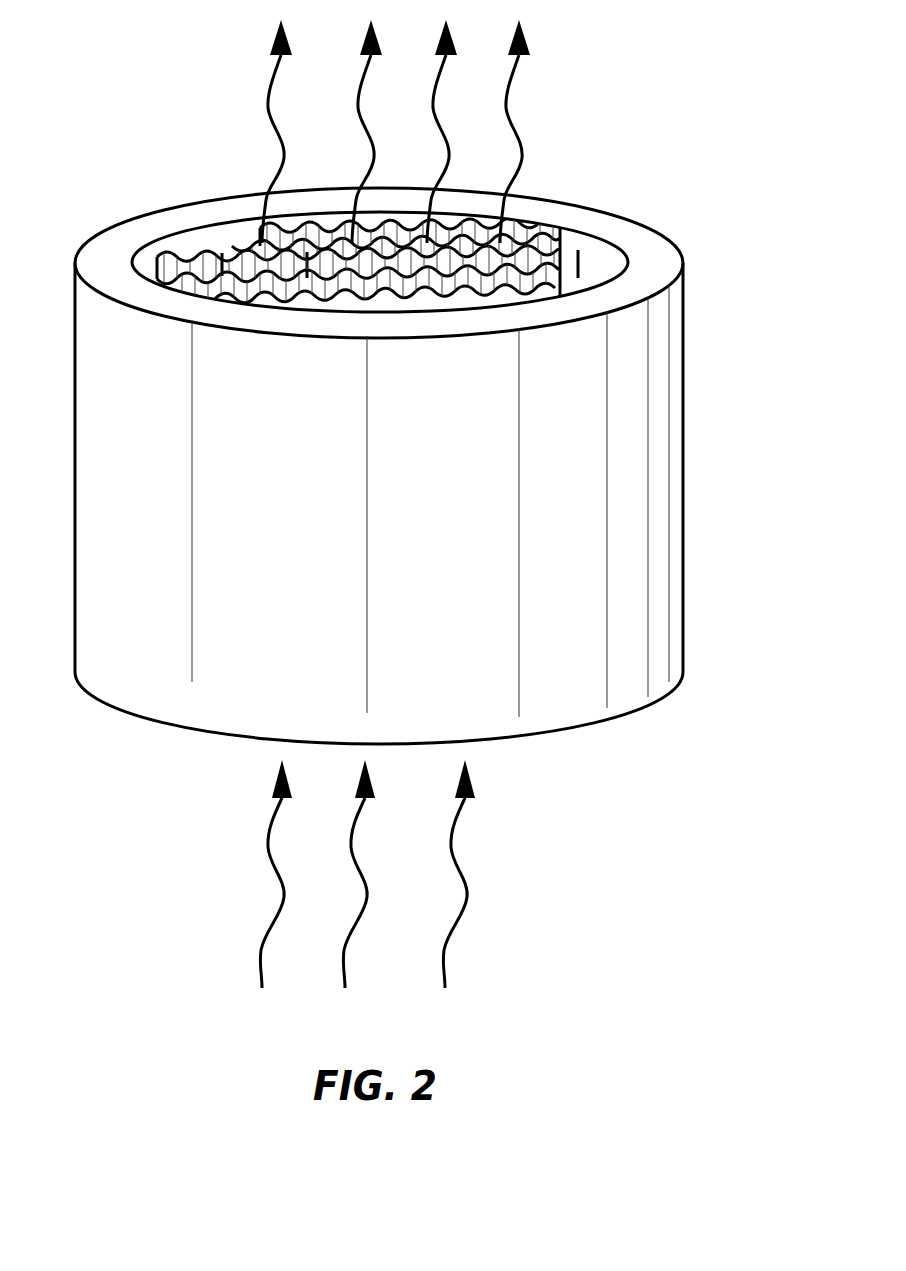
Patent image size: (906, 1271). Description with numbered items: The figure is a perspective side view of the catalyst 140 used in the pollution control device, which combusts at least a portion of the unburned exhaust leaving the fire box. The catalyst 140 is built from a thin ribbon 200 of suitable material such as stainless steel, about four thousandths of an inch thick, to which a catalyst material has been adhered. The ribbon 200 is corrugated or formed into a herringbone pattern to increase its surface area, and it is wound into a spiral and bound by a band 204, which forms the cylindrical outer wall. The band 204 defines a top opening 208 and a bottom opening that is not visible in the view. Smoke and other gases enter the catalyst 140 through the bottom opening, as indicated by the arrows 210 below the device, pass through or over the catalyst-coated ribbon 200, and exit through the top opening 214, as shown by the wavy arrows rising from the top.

The catalyst 140 is at (429, 435).
The ribbon 200 is at (353, 220).
The band 204 is at (662, 428).
The top opening 208 is at (172, 247).
The arrows 210 is at (468, 890).
The top opening 214 is at (513, 82).